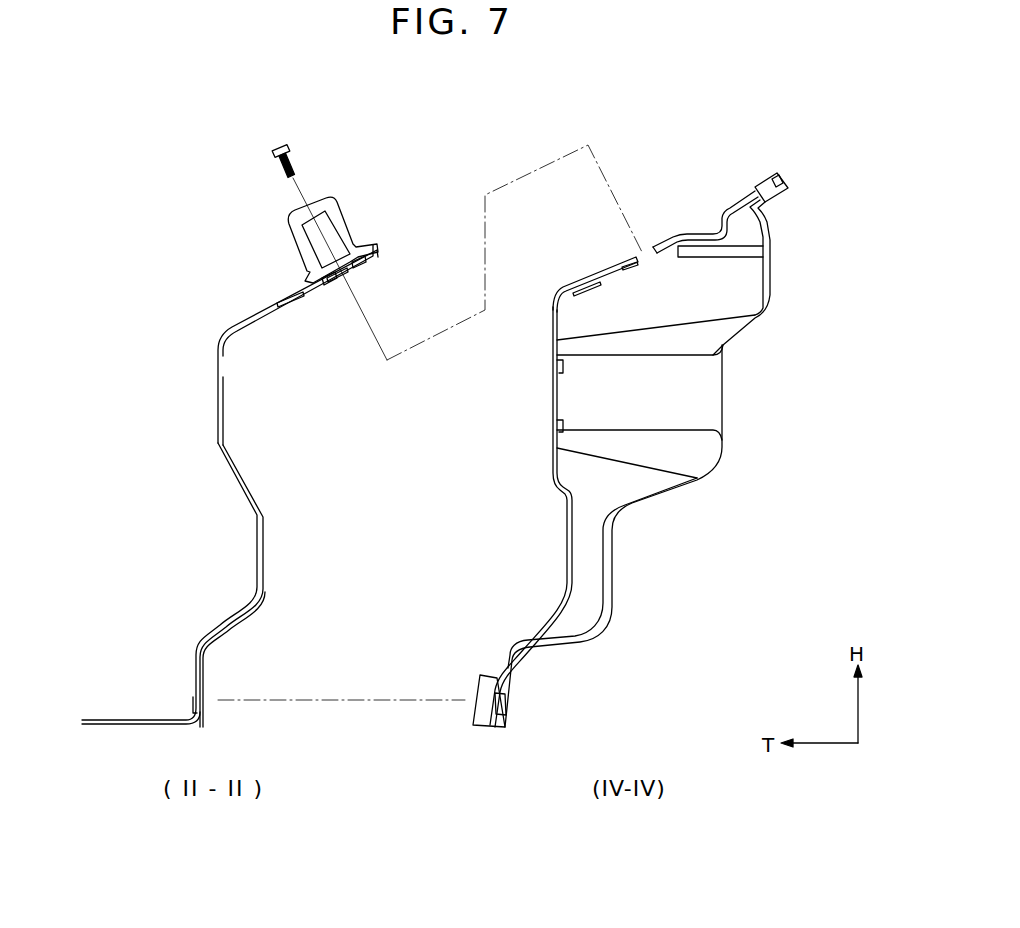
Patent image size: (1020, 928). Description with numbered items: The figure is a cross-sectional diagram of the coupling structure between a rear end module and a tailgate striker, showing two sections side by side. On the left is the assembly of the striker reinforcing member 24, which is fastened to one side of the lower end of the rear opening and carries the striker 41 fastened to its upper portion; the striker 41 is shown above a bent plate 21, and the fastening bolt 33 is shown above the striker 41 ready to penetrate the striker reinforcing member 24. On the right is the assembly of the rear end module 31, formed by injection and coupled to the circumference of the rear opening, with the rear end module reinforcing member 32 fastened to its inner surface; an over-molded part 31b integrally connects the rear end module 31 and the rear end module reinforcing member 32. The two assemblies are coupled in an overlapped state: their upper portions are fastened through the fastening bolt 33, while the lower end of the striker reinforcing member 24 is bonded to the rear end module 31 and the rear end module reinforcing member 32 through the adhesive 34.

The vehicle body panel 21 is at (238, 628).
The striker reinforcing member 24 is at (237, 326).
The rear end module 31 is at (677, 496).
The over-molded part 31b is at (653, 393).
The rear end module reinforcing member 32 is at (553, 312).
The fastening bolt 33 is at (272, 152).
The adhesive 34 is at (480, 687).
The striker 41 is at (333, 200).